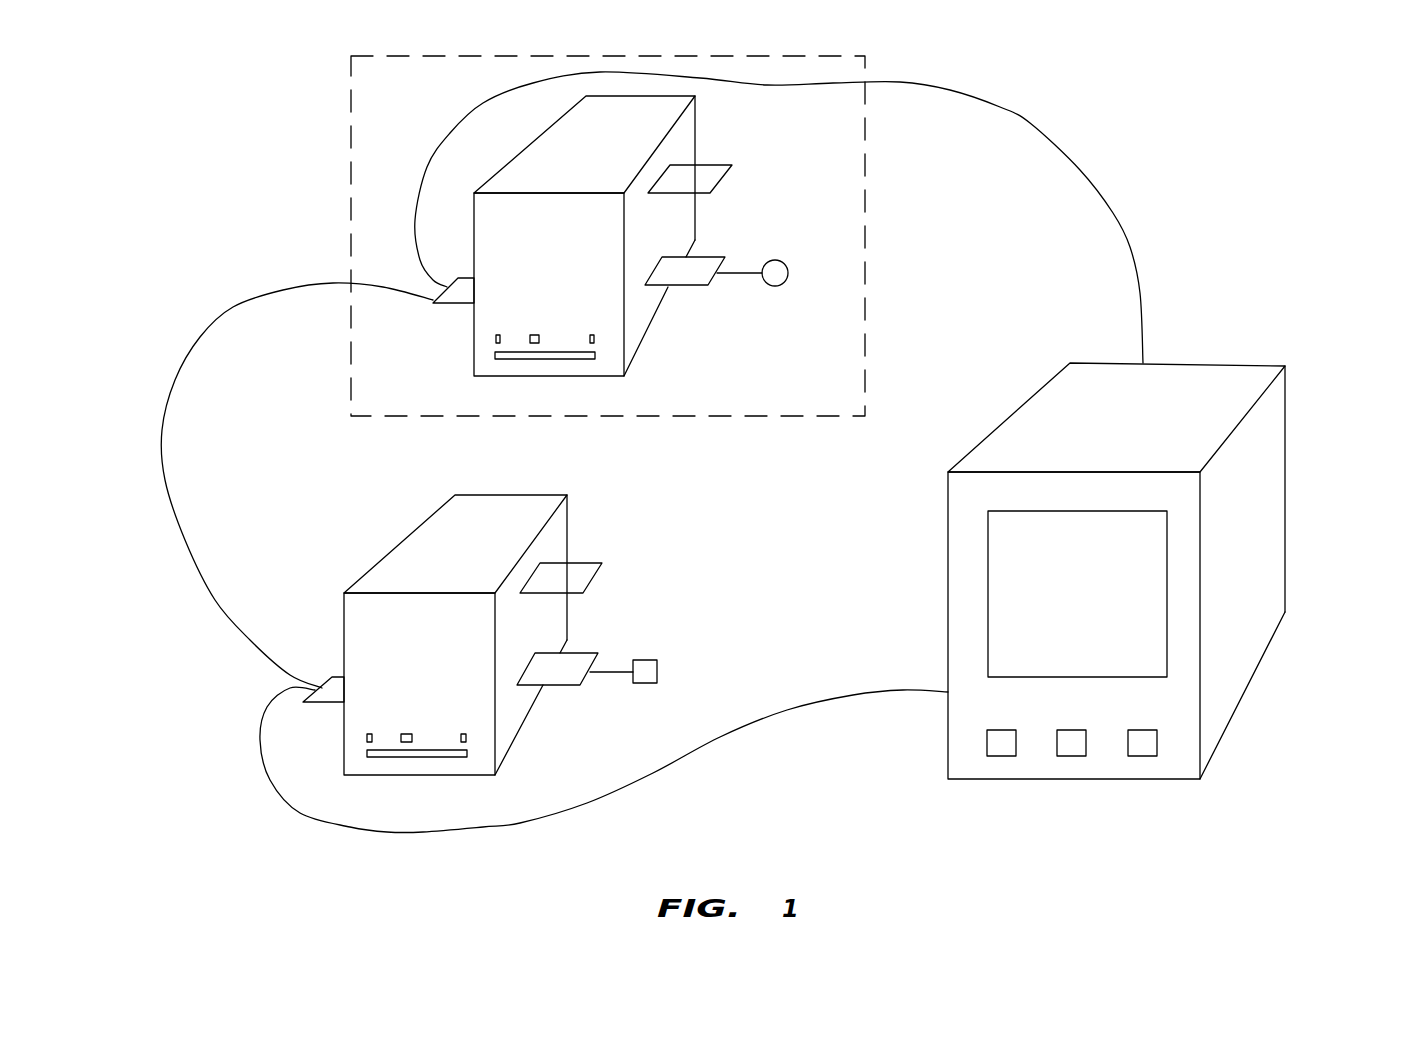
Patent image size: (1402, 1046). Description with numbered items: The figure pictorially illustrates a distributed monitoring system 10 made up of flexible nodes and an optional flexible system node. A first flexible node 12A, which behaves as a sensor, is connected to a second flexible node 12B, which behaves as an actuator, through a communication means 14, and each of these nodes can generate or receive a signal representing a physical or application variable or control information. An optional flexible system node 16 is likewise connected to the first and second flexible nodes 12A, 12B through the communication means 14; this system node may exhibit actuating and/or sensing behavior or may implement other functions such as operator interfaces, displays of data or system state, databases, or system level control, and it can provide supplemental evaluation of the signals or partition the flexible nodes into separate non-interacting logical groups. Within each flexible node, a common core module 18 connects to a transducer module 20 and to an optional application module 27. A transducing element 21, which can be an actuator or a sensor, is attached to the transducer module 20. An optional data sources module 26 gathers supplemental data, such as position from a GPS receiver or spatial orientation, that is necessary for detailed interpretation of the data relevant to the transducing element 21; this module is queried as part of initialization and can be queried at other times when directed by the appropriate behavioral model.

The distributed monitoring system 10 is at (173, 882).
The first flexible node 12A is at (343, 117).
The second flexible node 12B is at (321, 634).
The communication means 14 is at (1130, 231).
The flexible system node 16 is at (1163, 571).
The common core module 18 is at (568, 301).
The transducer module 20 is at (744, 369).
The transducing element 21 is at (833, 314).
The optional data sources module 26 is at (485, 344).
The optional application module 27 is at (740, 178).